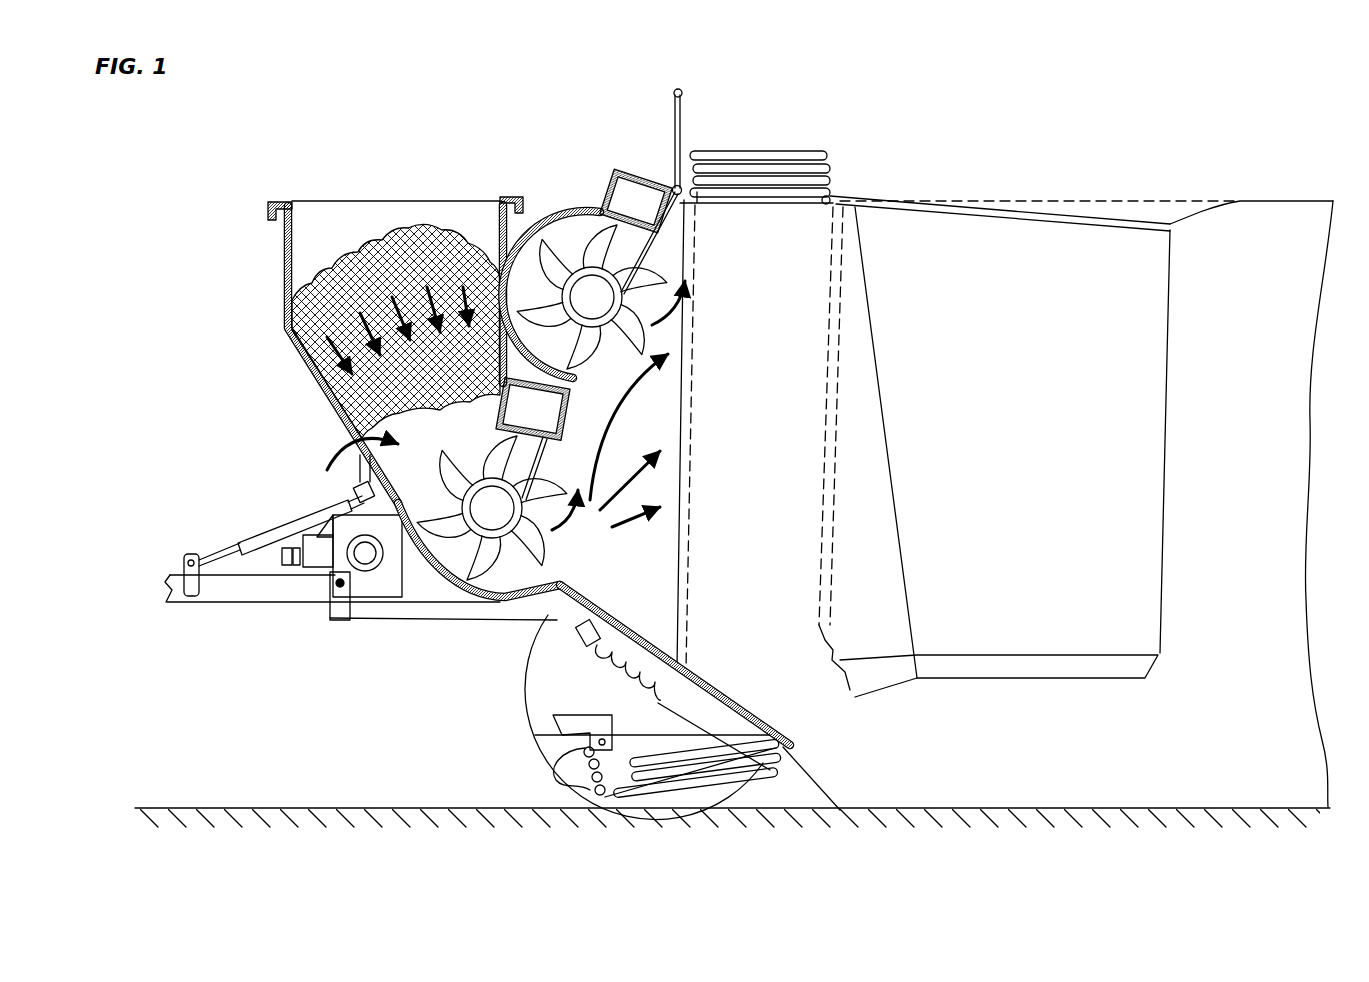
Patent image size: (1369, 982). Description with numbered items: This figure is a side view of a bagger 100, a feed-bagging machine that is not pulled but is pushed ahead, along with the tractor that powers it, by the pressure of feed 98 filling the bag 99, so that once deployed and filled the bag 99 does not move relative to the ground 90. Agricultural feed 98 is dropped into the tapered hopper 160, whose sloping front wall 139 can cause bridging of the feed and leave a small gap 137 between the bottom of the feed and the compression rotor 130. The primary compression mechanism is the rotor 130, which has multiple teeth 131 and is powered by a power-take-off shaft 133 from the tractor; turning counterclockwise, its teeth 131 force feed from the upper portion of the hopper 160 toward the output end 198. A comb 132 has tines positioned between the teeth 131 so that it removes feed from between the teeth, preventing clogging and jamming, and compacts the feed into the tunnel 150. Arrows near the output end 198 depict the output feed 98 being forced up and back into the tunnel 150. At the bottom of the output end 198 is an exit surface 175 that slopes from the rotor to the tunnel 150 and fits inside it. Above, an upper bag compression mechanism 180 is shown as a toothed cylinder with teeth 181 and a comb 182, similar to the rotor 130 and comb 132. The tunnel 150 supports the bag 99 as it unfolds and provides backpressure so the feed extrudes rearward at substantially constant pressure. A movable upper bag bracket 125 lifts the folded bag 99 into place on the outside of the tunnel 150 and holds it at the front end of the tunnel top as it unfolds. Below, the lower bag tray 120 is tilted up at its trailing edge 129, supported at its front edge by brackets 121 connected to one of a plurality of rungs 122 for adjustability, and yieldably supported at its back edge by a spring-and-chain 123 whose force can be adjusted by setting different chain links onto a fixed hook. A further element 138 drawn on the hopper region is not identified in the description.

The bagger 100 is at (972, 94).
The ground 90 is at (290, 808).
The feed 98 is at (377, 247).
The bag 99 is at (797, 152).
The lower bag tray 120 is at (617, 803).
The brackets 121 is at (612, 725).
The rungs 122 is at (550, 775).
The spring-and-chain 123 is at (592, 650).
The movable upper bag bracket 125 is at (676, 113).
The trailing edge 129 is at (778, 765).
The rotor 130 is at (484, 478).
The teeth 131 is at (447, 483).
The comb 132 is at (537, 458).
The power-take-off shaft 133 is at (285, 548).
The gap 137 is at (345, 460).
The hopper 138 is at (314, 228).
The sloping front wall 139 is at (300, 350).
The tunnel 150 is at (1165, 458).
The hopper 160 is at (445, 200).
The exit surface 175 is at (606, 614).
The upper bag compression mechanism 180 is at (612, 330).
The teeth 181 is at (612, 228).
The comb 182 is at (638, 250).
The output end 198 is at (500, 583).